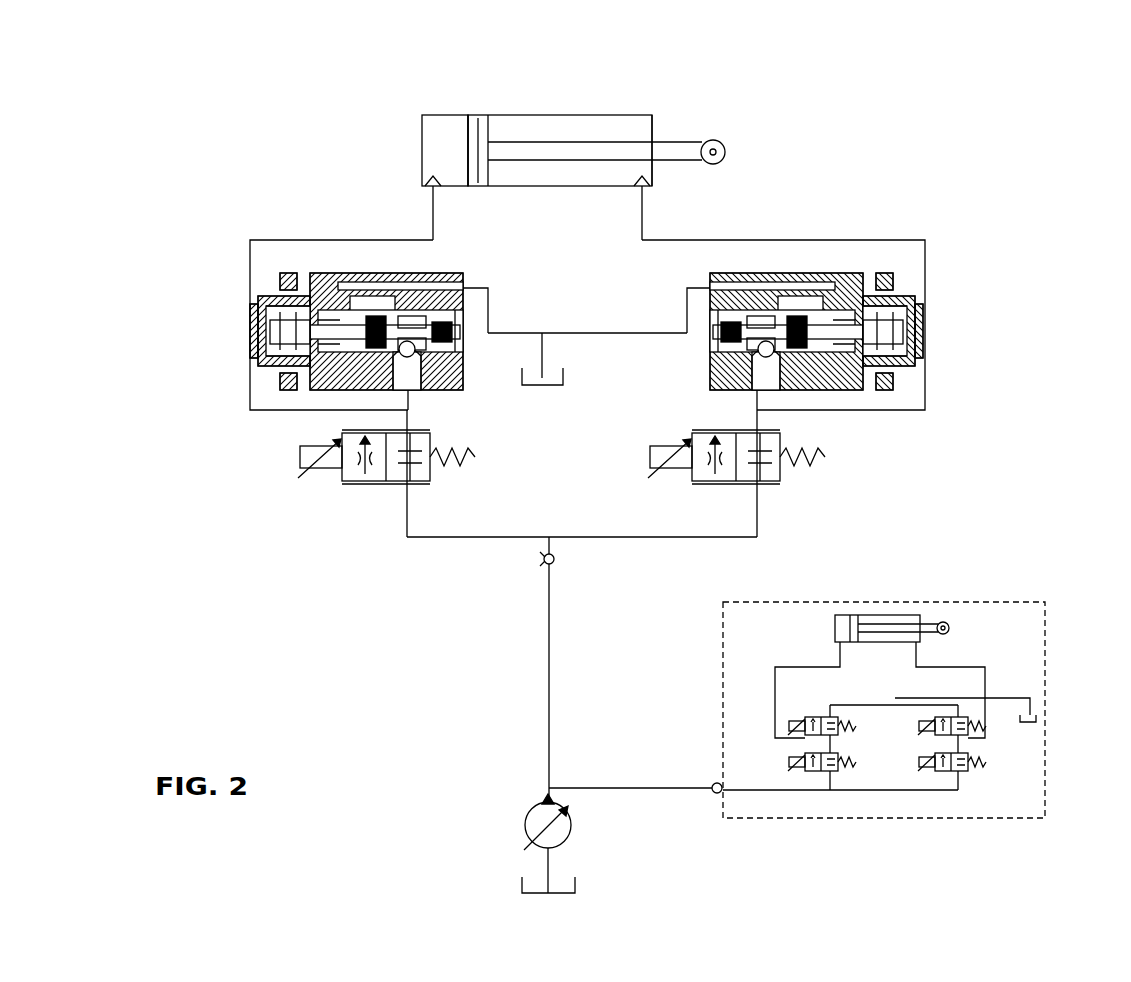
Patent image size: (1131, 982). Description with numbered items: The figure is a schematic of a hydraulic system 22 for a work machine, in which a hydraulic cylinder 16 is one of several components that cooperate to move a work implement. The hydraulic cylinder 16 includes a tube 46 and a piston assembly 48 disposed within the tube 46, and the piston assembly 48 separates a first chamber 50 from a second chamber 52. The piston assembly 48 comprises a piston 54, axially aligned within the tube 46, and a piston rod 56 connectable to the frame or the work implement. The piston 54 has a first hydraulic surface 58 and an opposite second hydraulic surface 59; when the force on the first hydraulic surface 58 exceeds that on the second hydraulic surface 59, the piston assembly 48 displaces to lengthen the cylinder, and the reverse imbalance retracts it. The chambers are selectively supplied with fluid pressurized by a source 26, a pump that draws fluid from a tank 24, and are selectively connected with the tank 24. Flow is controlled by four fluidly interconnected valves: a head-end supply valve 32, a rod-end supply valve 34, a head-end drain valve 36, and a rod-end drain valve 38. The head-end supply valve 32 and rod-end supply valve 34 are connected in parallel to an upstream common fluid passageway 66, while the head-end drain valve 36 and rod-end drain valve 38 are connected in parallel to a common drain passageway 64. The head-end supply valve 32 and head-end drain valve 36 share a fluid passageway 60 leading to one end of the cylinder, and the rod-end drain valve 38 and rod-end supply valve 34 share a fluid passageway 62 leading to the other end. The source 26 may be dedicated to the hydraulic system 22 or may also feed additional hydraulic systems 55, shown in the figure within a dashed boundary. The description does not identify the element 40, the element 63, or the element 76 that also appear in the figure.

The hydraulic cylinder 16 is at (618, 100).
The hydraulic system 22 is at (954, 98).
The tank 24 is at (564, 386).
The source of pressurized fluid 26 is at (572, 828).
The head-end supply valve 32 is at (368, 512).
The rod-end supply valve 34 is at (812, 508).
The head-end drain valve 36 is at (468, 284).
The rod-end drain valve 38 is at (673, 306).
The control system 40 is at (248, 628).
The tube 46 is at (437, 115).
The piston assembly 48 is at (503, 169).
The first chamber 50 is at (424, 150).
The second chamber 52 is at (648, 127).
The piston 54 is at (486, 180).
The additional hydraulic systems 55 is at (1048, 650).
The piston rod 56 is at (672, 152).
The first hydraulic surface 58 is at (472, 122).
The second hydraulic surface 59 is at (492, 184).
The fluid passageway 60 is at (312, 238).
The fluid passageway 62 is at (789, 238).
The return line 63 is at (925, 375).
The common drain passageway 64 is at (545, 346).
The upstream common fluid passageway 66 is at (586, 537).
The check valve 76 is at (556, 559).